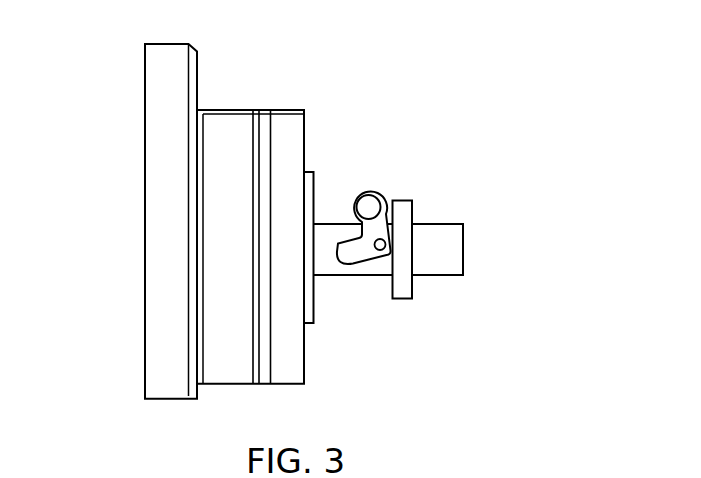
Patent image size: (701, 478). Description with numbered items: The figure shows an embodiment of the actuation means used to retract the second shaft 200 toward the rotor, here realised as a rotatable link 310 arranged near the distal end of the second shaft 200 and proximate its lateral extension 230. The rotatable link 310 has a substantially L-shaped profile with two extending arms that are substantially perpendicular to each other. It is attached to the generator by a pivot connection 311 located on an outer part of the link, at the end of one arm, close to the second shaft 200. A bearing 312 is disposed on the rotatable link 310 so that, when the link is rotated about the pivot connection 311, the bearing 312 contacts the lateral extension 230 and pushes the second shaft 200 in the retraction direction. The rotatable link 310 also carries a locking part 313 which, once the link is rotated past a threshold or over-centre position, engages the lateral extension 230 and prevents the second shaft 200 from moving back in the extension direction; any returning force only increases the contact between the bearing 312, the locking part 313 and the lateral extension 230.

The rotatable link 310 is at (431, 107).
The pivot connection 311 is at (367, 203).
The bearing 312 is at (385, 248).
The locking part 313 is at (358, 262).
The second shaft 200 is at (450, 240).
The lateral extension 230 is at (400, 298).